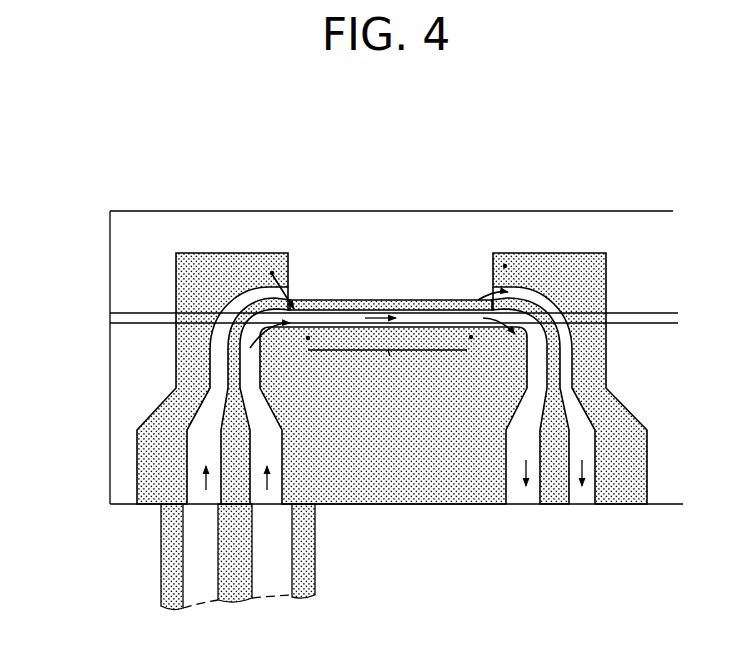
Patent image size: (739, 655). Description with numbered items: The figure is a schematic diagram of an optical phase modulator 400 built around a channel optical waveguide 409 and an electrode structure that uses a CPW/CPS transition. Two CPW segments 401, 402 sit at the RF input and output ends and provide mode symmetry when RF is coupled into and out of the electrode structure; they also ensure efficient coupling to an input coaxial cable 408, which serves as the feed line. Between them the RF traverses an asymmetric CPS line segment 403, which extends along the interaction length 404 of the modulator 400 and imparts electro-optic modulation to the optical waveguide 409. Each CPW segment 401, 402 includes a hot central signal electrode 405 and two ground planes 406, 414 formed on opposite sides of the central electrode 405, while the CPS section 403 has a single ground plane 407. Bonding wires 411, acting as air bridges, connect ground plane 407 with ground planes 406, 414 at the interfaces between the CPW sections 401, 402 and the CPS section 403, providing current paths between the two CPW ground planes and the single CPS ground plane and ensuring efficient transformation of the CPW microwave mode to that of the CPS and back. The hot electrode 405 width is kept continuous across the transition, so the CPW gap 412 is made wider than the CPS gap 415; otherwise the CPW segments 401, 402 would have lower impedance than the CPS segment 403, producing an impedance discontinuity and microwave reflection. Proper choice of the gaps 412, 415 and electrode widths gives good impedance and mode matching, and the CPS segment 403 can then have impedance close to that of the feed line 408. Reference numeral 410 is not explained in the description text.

The optical phase modulator 400 is at (433, 176).
The CPW segment 401 is at (204, 246).
The CPW segment 402 is at (581, 250).
The CPS line segment 403 is at (389, 295).
The interaction length 404 is at (387, 350).
The hot central electrode 405 is at (225, 493).
The ground plane 406 is at (153, 478).
The ground plane 407 is at (297, 490).
The input coaxial cable 408 is at (304, 556).
The channel optical waveguide 409 is at (110, 313).
The second reference plane 410 is at (641, 313).
The bonding wires 411 is at (308, 338).
The CPW gap 412 is at (252, 300).
The ground plane 414 is at (627, 504).
The CPS gap 415 is at (357, 300).